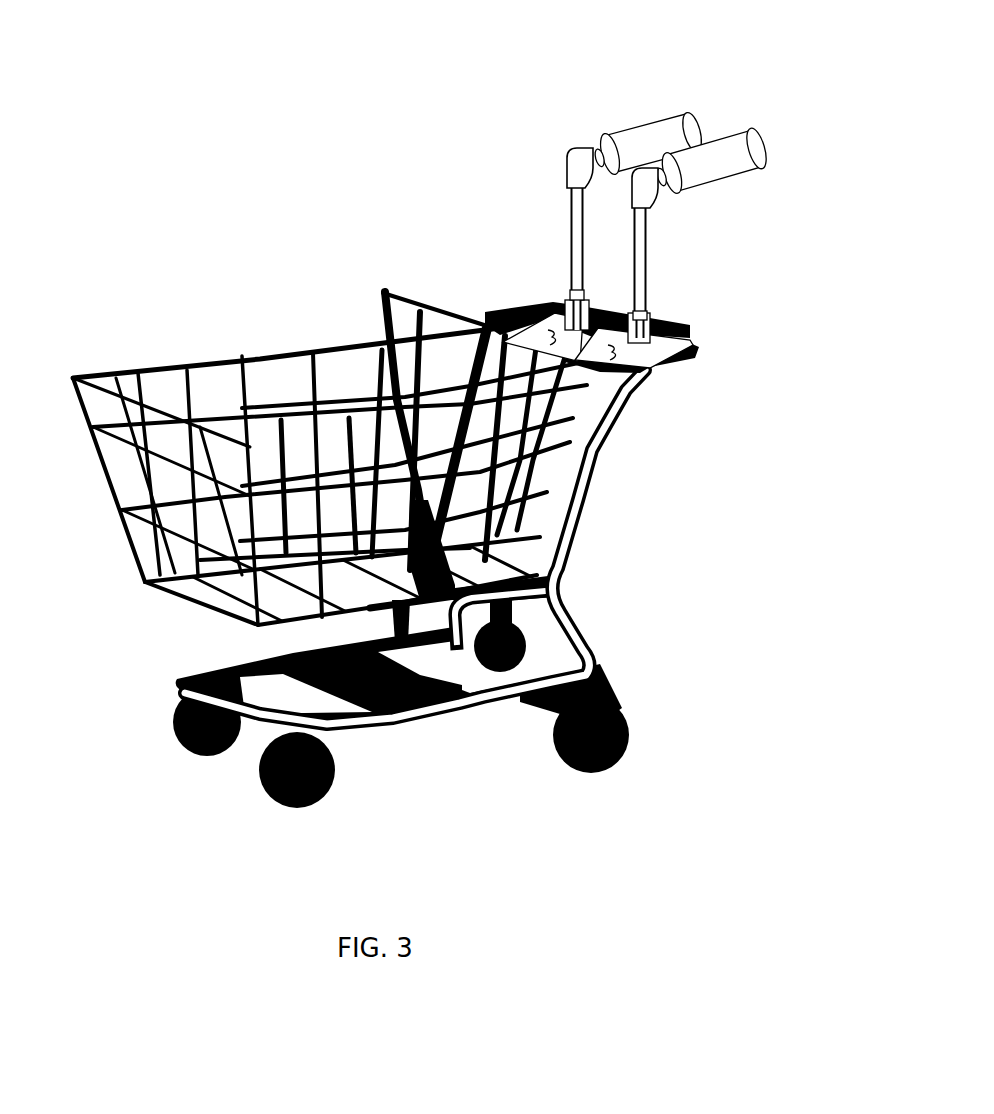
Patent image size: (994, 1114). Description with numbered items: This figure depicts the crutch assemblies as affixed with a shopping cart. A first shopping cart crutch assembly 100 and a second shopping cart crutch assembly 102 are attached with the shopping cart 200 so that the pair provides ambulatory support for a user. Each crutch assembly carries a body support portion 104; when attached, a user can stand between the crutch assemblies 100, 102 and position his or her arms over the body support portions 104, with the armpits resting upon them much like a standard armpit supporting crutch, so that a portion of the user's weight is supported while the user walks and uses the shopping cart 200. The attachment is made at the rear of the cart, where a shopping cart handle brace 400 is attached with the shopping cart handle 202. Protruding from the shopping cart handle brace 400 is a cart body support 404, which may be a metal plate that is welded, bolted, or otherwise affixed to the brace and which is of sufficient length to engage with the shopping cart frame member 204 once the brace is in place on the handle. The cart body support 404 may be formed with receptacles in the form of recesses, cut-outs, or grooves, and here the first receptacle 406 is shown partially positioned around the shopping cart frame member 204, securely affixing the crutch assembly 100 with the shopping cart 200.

The first shopping cart crutch assembly 100 is at (628, 176).
The second shopping cart crutch assembly 102 is at (662, 225).
The body support portion 104 is at (613, 120).
The shopping cart 200 is at (167, 350).
The shopping cart handle 202 is at (673, 338).
The shopping cart frame member 204 is at (600, 372).
The shopping cart handle brace 400 is at (520, 281).
The cart body support 404 is at (527, 326).
The first receptacle 406 is at (500, 332).